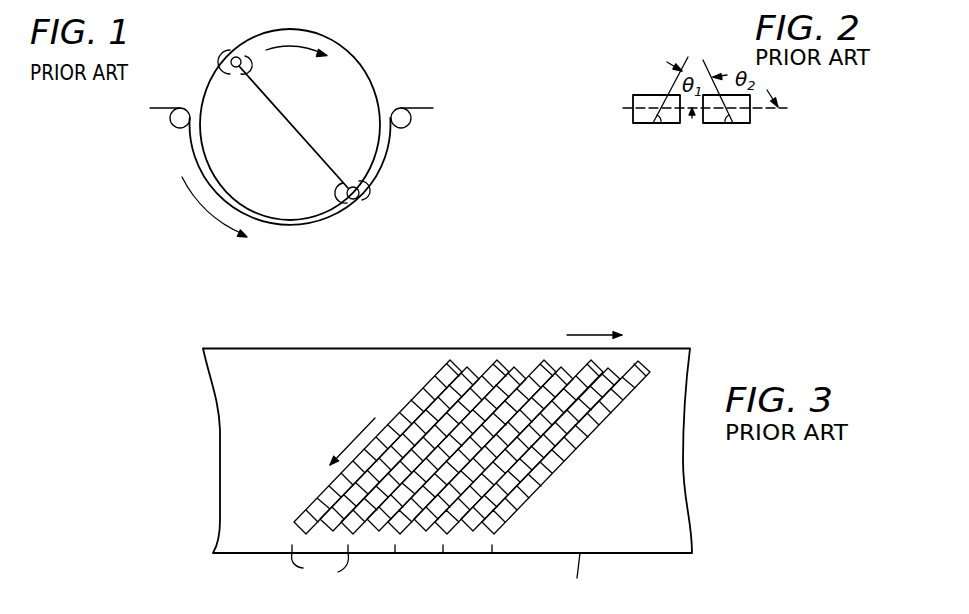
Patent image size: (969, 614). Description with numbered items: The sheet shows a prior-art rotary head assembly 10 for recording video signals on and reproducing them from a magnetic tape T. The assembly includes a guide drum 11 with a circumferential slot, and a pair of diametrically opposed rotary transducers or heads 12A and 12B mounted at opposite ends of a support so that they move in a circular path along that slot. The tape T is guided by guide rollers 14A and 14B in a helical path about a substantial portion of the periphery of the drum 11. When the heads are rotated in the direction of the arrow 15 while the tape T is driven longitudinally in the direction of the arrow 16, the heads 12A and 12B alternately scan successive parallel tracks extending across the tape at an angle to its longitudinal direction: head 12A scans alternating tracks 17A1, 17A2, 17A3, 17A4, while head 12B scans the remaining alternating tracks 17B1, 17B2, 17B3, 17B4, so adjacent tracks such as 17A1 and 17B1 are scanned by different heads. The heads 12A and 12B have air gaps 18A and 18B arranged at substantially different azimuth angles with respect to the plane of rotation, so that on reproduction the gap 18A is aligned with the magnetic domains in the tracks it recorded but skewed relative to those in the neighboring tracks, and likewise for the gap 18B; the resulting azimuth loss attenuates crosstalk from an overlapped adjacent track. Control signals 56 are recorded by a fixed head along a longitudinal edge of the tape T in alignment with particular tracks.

In FIG. 1, the rotary head assembly 10 is at (355, 43).
In FIG. 1, the guide drum 11 is at (368, 71).
In FIG. 1, the rotary transducer or head 12A is at (225, 62).
In FIG. 2, the rotary transducer or head 12A is at (632, 114).
In FIG. 1, the rotary transducer or head 12B is at (345, 205).
In FIG. 2, the rotary transducer or head 12B is at (750, 118).
In FIG. 1, the guide roller 14A is at (173, 125).
In FIG. 1, the guide roller 14B is at (406, 127).
In FIG. 1, the arrow indicating head rotation direction 15 is at (297, 47).
In FIG. 3, the arrow indicating head rotation direction 15 is at (355, 442).
In FIG. 1, the arrow indicating tape longitudinal direction 16 is at (198, 207).
In FIG. 3, the arrow indicating tape longitudinal direction 16 is at (600, 335).
In FIG. 2, the air gap 18A is at (657, 122).
In FIG. 2, the air gap 18B is at (723, 123).
In FIG. 3, the track 17A1 is at (640, 363).
In FIG. 3, the track 17A2 is at (595, 366).
In FIG. 3, the track 17A3 is at (555, 360).
In FIG. 3, the track 17A4 is at (502, 358).
In FIG. 3, the track 17B1 is at (613, 373).
In FIG. 3, the track 17B2 is at (570, 368).
In FIG. 3, the track 17B3 is at (525, 368).
In FIG. 3, the track 17B4 is at (475, 370).
In FIG. 3, the control signals 56 is at (320, 567).
In FIG. 3, the magnetic tape T is at (583, 579).